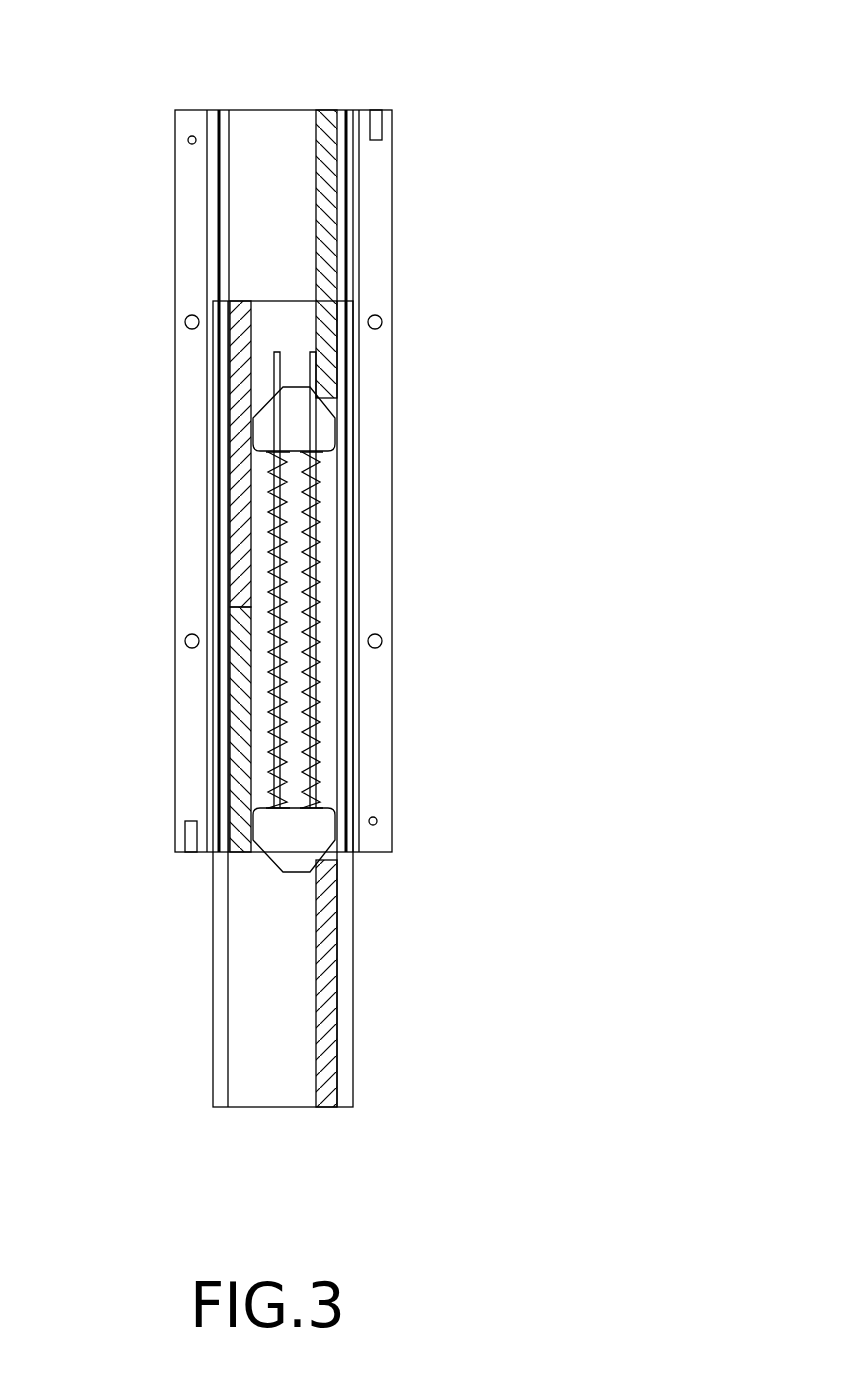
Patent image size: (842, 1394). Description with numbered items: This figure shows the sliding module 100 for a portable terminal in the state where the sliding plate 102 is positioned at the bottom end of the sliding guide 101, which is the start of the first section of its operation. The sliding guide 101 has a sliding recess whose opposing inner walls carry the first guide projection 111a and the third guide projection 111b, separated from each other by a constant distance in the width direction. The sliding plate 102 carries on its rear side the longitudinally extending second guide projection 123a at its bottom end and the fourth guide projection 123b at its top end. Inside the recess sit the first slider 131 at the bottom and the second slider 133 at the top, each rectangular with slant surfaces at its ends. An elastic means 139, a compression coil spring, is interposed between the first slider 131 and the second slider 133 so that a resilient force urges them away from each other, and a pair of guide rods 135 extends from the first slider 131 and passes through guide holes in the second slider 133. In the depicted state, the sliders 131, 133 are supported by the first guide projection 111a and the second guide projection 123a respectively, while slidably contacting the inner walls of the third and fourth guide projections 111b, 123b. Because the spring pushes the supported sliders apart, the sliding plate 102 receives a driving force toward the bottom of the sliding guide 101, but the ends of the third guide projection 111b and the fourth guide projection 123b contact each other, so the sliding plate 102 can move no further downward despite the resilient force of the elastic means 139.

The sliding module 100 is at (484, 34).
The sliding guide 101 is at (167, 115).
The sliding plate 102 is at (195, 1057).
The first guide projection 111a is at (332, 235).
The third guide projection 111b is at (237, 739).
The second guide projection 123a is at (328, 983).
The fourth guide projection 123b is at (240, 458).
The first slider 131 is at (288, 860).
The second slider 133 is at (327, 437).
The guide rod 135 is at (276, 356).
The elastic means 139 is at (270, 562).